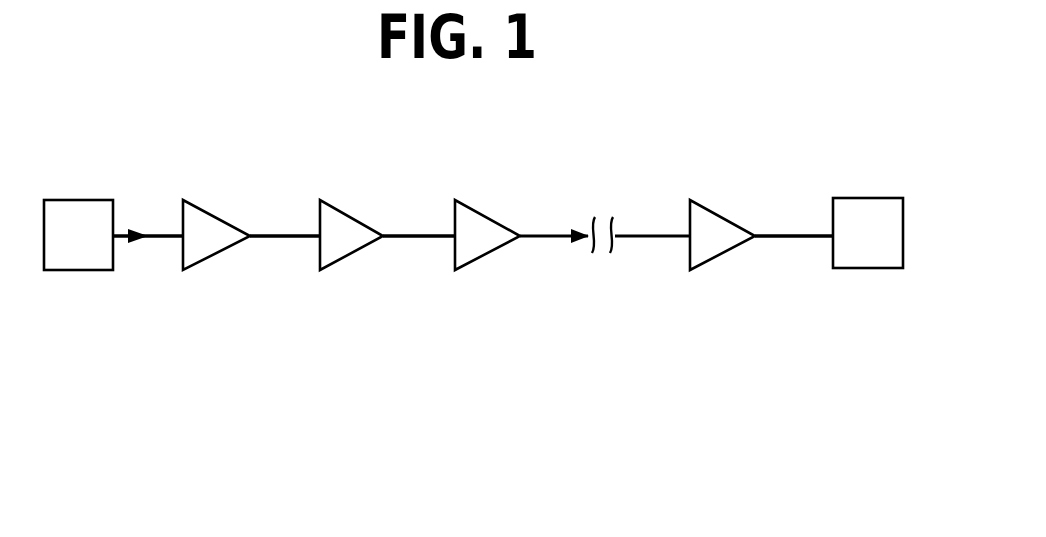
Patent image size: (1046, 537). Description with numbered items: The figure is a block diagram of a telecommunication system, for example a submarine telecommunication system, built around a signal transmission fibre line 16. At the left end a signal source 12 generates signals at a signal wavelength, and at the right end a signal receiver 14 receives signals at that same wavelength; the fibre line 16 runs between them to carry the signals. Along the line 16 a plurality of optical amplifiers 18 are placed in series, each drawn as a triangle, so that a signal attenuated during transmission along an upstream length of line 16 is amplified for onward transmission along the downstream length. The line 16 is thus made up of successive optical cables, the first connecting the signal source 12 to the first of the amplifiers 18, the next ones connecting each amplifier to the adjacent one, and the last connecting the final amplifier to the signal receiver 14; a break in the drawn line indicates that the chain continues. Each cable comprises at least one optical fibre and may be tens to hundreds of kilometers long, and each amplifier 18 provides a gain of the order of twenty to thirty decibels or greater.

The signal source 12 is at (70, 205).
The signal receiver 14 is at (857, 207).
The signal transmission fibre line 16 is at (234, 335).
The optical amplifier 18 is at (208, 220).